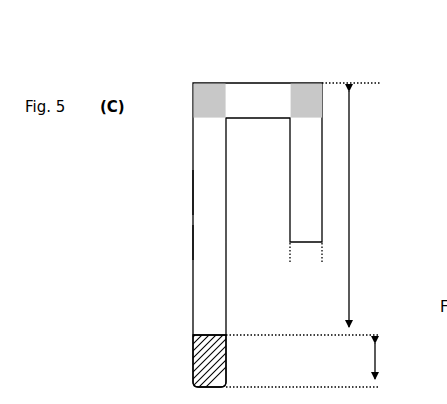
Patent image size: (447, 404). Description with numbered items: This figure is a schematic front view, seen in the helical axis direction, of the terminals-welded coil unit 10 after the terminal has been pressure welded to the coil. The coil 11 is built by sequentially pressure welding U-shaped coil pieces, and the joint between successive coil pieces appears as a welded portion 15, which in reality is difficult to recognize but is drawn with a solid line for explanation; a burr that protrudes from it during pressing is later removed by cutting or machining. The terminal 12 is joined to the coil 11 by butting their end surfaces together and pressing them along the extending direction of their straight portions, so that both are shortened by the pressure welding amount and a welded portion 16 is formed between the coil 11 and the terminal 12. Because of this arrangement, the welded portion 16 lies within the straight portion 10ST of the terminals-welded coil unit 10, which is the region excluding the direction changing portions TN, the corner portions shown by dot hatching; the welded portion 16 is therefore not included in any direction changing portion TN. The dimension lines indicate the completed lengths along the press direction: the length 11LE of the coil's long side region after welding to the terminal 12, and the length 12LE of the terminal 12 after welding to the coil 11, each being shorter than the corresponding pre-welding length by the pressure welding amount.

The terminals-welded coil unit 10 is at (378, 80).
The direction changing portion TN is at (204, 95).
The coil 11 is at (192, 193).
The straight portion 10ST is at (192, 240).
The welded portion 15 is at (318, 244).
The terminal 12 is at (192, 362).
The welded portion 16 is at (210, 335).
The length after being welded 11LE is at (313, 209).
The length after being welded 12LE is at (324, 365).